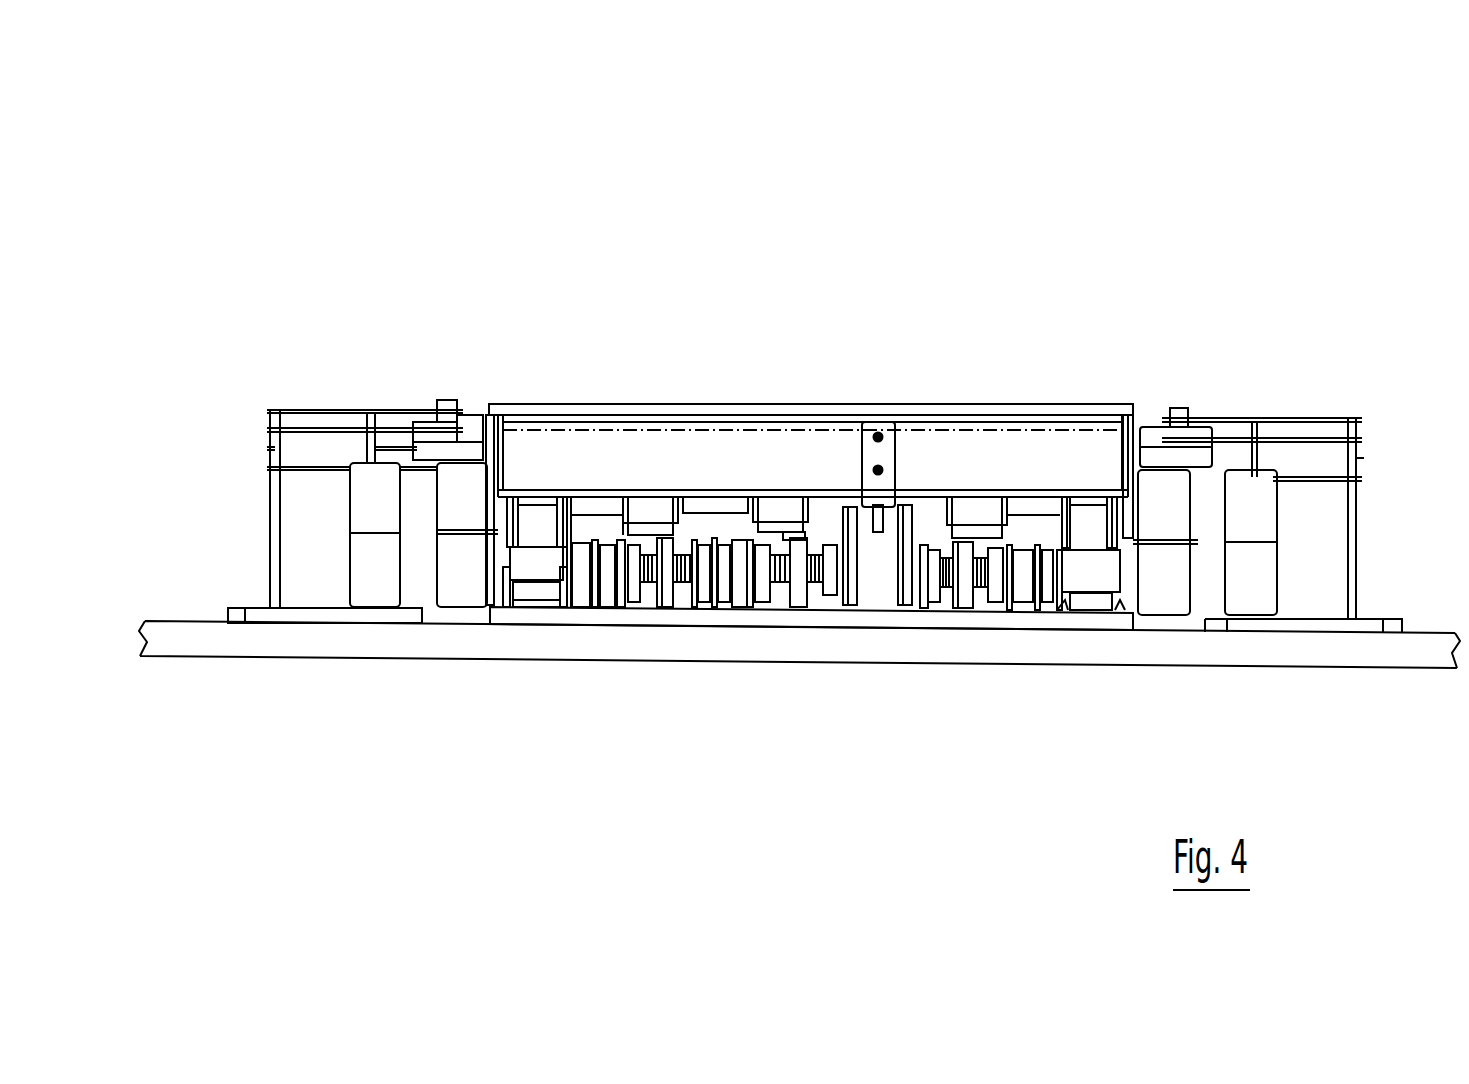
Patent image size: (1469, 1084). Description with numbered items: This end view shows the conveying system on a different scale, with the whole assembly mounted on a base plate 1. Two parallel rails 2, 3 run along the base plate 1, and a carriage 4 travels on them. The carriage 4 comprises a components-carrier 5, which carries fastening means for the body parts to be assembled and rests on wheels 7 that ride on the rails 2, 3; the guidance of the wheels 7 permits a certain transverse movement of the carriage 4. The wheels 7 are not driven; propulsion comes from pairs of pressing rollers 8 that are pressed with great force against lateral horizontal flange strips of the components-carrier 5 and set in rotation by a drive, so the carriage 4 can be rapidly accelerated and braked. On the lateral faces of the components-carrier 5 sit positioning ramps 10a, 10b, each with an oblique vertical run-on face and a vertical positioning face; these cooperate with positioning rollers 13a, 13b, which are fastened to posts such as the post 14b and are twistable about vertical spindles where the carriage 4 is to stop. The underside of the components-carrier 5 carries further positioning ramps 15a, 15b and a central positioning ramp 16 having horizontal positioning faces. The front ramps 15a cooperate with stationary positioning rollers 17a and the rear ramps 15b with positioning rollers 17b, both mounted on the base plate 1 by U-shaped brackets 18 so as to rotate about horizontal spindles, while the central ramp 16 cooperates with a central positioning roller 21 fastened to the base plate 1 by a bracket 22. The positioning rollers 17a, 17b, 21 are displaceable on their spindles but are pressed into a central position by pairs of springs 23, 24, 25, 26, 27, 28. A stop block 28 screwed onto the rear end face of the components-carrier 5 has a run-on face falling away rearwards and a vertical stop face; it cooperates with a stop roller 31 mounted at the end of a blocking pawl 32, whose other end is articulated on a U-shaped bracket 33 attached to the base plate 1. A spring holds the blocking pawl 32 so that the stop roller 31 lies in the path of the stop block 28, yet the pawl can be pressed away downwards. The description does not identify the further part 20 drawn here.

The base plate 1 is at (1367, 655).
The rail 2 is at (530, 598).
The rail 3 is at (1205, 624).
The carriage 4 is at (1078, 325).
The components-carrier 5 is at (812, 410).
The wheels 7 is at (530, 515).
The pairs of pressing rollers 8 is at (427, 492).
The positioning ramp 10a is at (423, 515).
The positioning ramp 10b is at (445, 475).
The positioning roller 13a is at (477, 425).
The positioning roller 13b is at (437, 453).
The post 14b is at (320, 530).
The positioning ramp 15a is at (630, 527).
The positioning ramp 15b is at (673, 527).
The positioning ramp 16 is at (782, 510).
The positioning roller 17a is at (663, 597).
The positioning roller 17b is at (655, 597).
The U-shaped bracket 18 is at (588, 582).
The bearing block 20 is at (617, 590).
The central positioning roller 21 is at (830, 590).
The bracket 22 is at (743, 587).
The spring 23 is at (647, 577).
The spring 24 is at (720, 548).
The spring 25 is at (747, 545).
The spring 26 is at (870, 420).
The spring 27 is at (950, 530).
The stop block 28 is at (882, 447).
The stop roller 31 is at (883, 540).
The blocking pawl 32 is at (893, 565).
The U-shaped bracket 33 is at (838, 585).